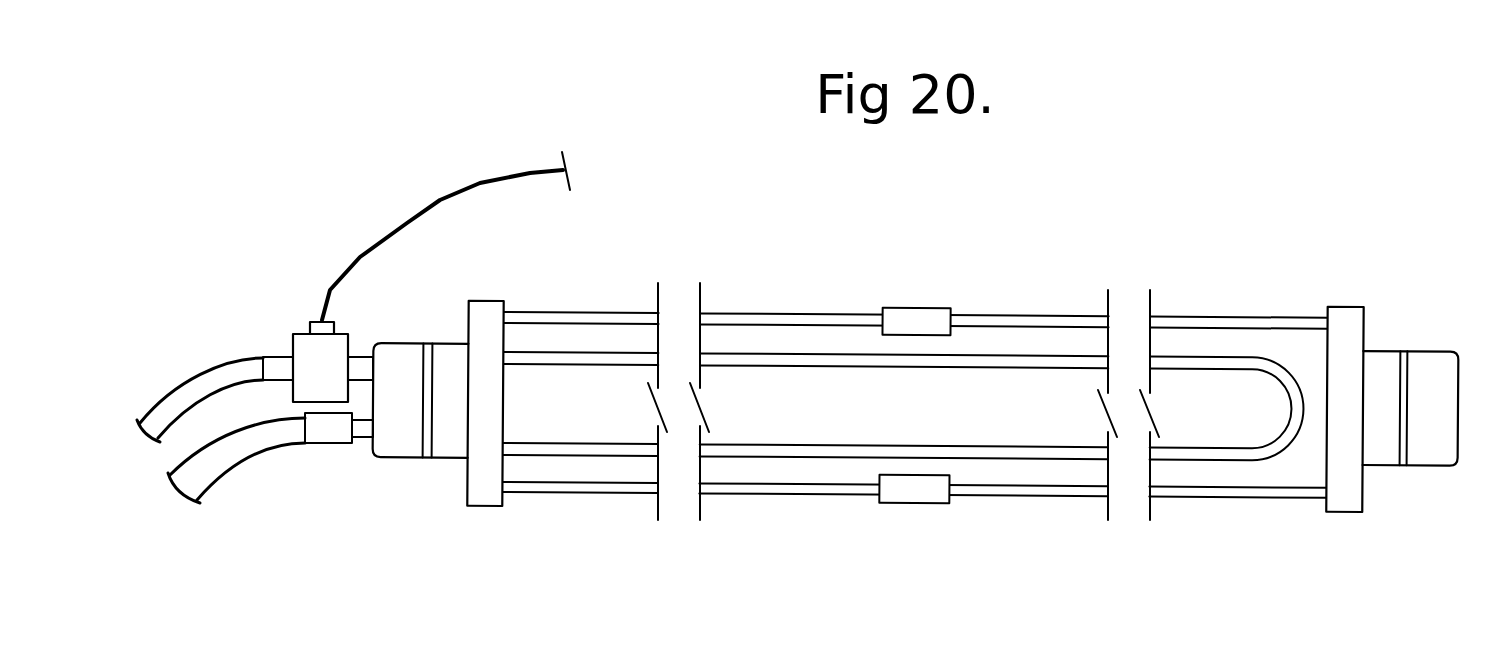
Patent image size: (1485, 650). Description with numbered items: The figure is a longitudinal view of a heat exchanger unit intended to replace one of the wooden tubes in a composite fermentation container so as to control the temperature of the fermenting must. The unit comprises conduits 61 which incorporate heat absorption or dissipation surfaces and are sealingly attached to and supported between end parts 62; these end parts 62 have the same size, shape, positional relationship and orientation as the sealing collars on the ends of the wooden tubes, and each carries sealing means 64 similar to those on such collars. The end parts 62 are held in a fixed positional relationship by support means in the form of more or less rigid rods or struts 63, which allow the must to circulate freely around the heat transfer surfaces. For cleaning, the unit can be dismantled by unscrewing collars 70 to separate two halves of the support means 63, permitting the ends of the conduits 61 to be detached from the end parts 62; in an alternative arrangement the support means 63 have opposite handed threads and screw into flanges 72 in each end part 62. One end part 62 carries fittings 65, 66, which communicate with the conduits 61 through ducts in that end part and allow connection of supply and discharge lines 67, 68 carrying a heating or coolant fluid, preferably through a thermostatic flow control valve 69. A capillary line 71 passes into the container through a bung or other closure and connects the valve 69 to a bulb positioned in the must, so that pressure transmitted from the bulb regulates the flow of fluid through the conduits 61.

The conduits 61 is at (763, 358).
The end parts 62 is at (453, 432).
The rods or struts 63 is at (773, 487).
The sealing means 64 is at (432, 343).
The fitting 65 is at (362, 438).
The fitting 66 is at (360, 365).
The supply and discharge line 67 is at (230, 450).
The supply and discharge line 68 is at (217, 378).
The thermostatic flow control valve 69 is at (303, 350).
The collars 70 is at (915, 327).
The capillary line 71 is at (437, 202).
The flanges 72 is at (488, 323).